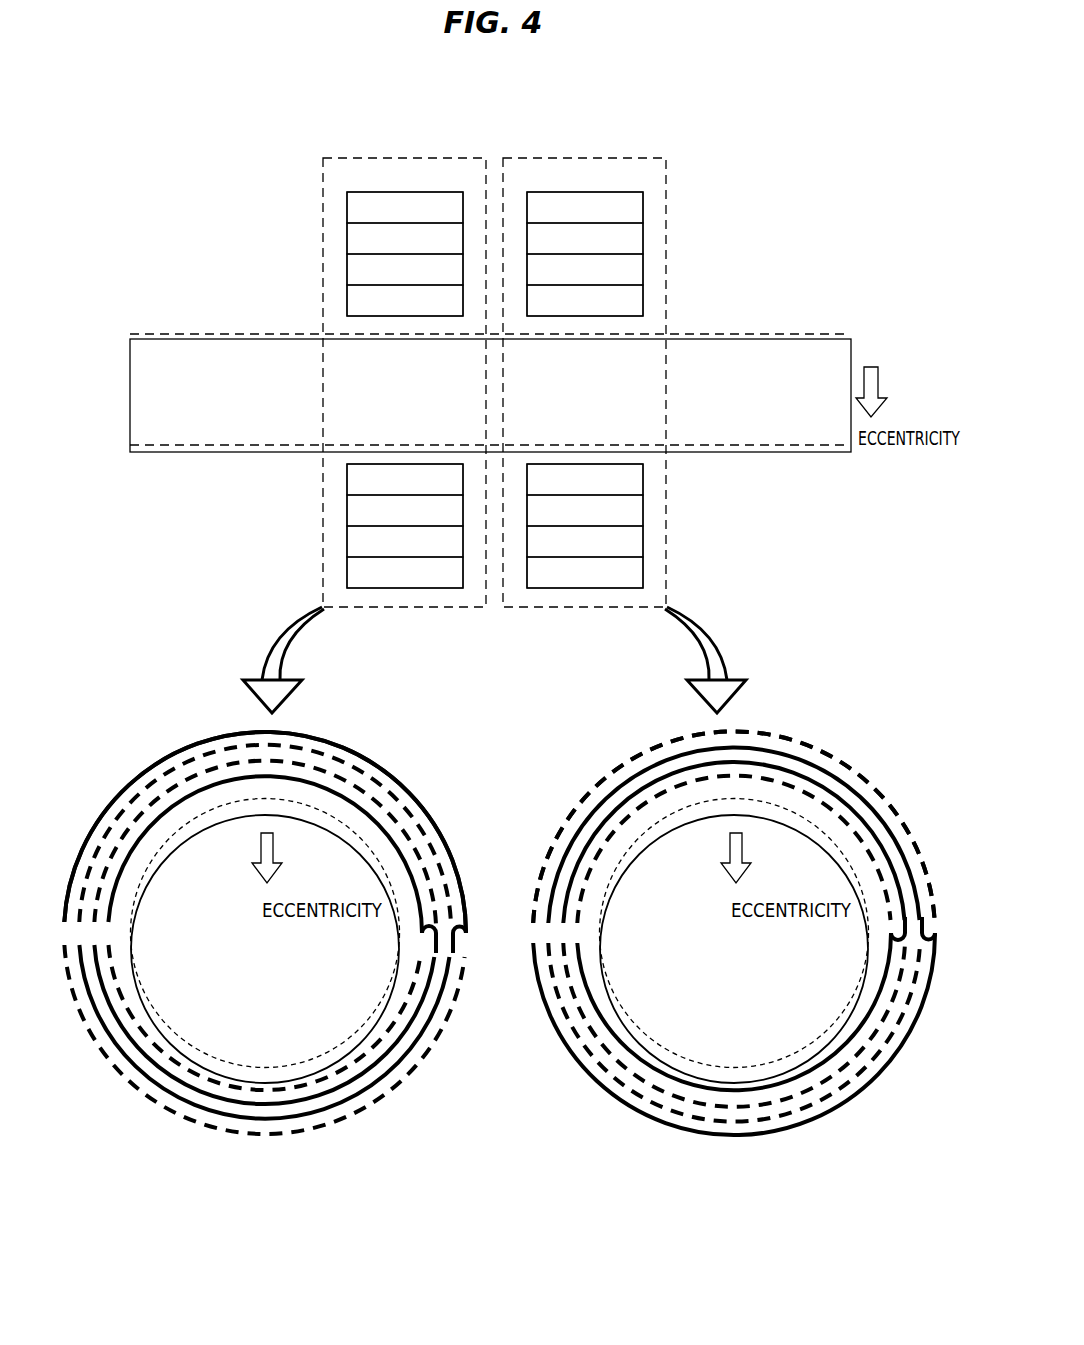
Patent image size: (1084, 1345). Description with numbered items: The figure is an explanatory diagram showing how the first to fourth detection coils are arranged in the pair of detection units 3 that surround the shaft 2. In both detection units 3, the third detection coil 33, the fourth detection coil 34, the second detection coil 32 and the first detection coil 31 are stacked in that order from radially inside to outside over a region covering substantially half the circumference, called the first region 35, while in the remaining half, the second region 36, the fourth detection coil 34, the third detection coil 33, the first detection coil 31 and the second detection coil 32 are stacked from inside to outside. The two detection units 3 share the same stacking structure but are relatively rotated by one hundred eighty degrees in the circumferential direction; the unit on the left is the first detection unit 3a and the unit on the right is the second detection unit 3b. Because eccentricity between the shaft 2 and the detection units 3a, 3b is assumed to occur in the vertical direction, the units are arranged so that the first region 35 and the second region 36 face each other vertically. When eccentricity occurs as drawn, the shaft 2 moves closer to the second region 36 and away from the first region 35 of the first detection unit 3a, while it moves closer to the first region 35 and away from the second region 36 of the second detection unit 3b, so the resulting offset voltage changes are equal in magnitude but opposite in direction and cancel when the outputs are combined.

The shaft 2 is at (163, 338).
The detection unit 3 is at (438, 154).
The first detection unit 3a is at (418, 778).
The second detection unit 3b is at (892, 780).
The first detection coil 31 is at (347, 208).
The second detection coil 32 is at (347, 240).
The third detection coil 33 is at (347, 300).
The fourth detection coil 34 is at (347, 272).
The first region 35 is at (395, 177).
The second region 36 is at (576, 177).